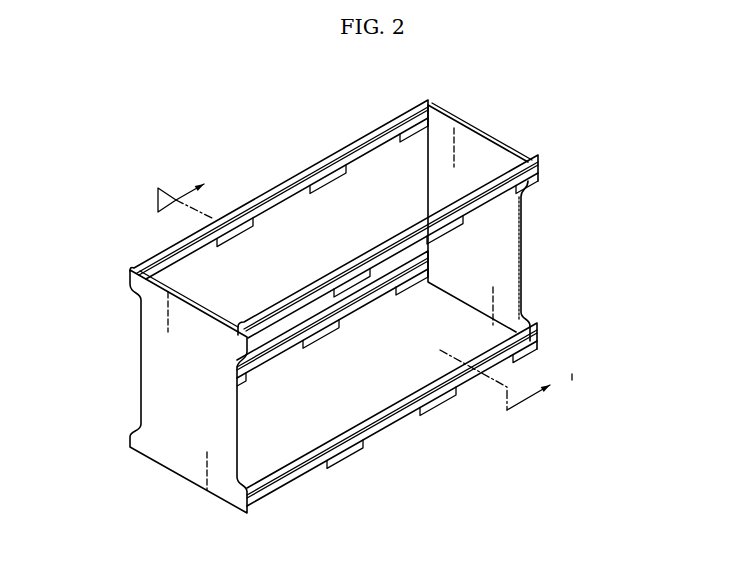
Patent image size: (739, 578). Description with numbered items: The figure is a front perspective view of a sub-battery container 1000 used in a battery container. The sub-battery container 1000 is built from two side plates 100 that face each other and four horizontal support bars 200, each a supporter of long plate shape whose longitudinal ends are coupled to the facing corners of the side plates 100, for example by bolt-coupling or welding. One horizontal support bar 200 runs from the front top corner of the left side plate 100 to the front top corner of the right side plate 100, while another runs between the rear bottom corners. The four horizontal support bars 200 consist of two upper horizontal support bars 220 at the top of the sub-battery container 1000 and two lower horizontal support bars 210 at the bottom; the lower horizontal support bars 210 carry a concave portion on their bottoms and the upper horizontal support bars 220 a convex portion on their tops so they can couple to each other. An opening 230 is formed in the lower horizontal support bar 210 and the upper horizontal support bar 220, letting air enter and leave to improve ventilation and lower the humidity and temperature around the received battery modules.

The sub-battery container 1000 is at (223, 145).
The side plate 100 is at (440, 185).
The horizontal support bar 200 is at (403, 303).
The upper horizontal support bar 220 is at (430, 107).
The lower horizontal support bar 210 is at (425, 283).
The opening 230 is at (287, 205).